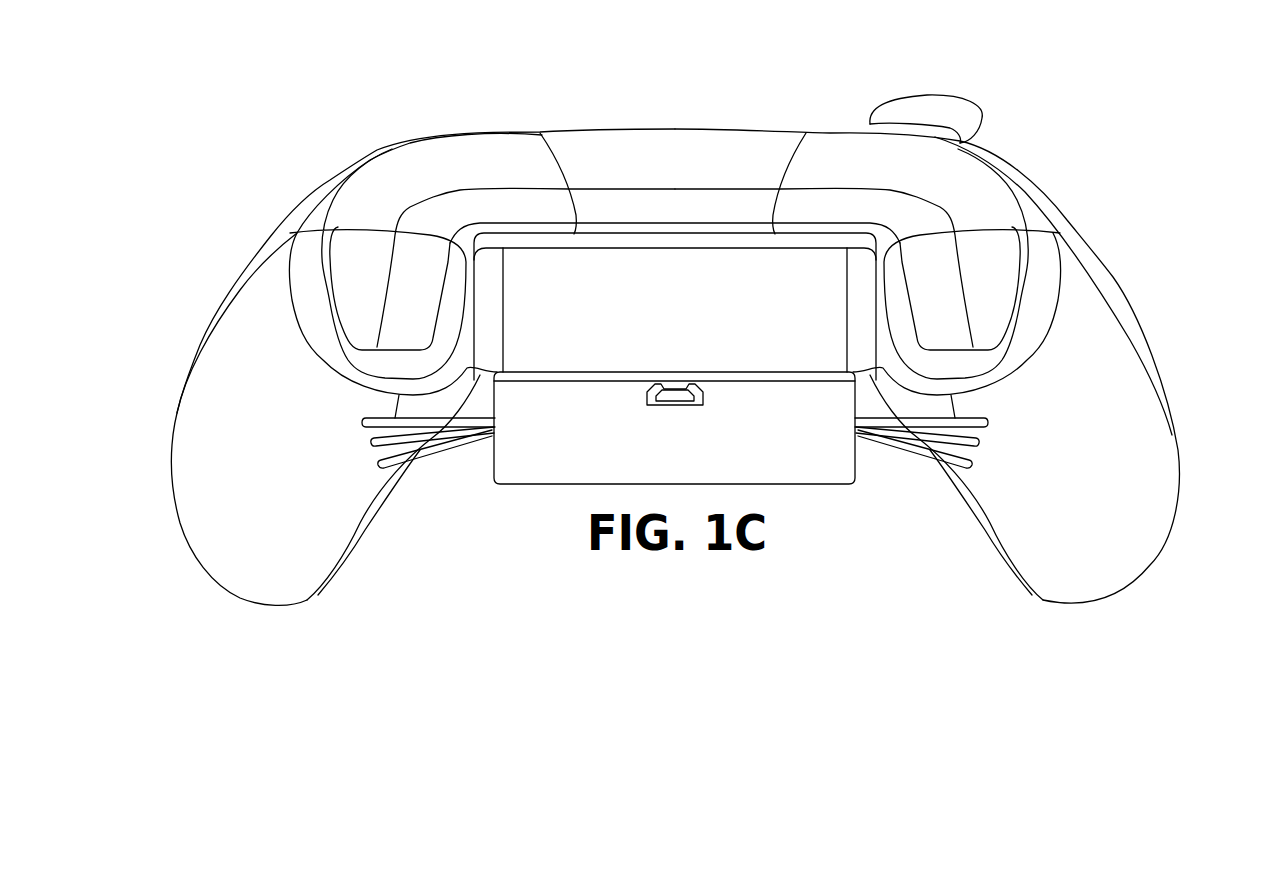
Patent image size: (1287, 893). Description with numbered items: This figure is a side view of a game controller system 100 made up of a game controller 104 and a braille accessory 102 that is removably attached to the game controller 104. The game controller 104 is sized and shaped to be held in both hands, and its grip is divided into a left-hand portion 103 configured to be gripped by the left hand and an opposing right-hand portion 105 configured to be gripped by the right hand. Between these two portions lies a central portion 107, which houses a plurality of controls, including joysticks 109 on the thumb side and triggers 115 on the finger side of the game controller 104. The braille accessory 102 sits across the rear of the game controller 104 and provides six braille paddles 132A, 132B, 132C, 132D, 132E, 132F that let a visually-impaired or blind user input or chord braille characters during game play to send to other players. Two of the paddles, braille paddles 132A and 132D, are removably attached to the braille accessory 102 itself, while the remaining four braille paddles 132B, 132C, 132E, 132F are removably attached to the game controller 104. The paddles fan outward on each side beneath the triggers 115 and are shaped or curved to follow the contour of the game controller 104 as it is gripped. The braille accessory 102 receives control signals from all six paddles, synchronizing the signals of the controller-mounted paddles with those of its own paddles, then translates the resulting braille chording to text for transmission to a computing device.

The game controller system 100 is at (268, 129).
The braille accessory 102 is at (809, 502).
The left-hand portion 103 is at (170, 482).
The game controller 104 is at (1112, 258).
The right-hand portion 105 is at (1178, 482).
The central portion 107 is at (693, 175).
The joysticks 109 is at (928, 94).
The triggers 115 is at (333, 325).
The braille paddle 132A is at (362, 421).
The braille paddle 132B is at (370, 442).
The braille paddle 132C is at (378, 465).
The braille paddle 132D is at (988, 421).
The braille paddle 132E is at (982, 441).
The braille paddle 132F is at (972, 465).